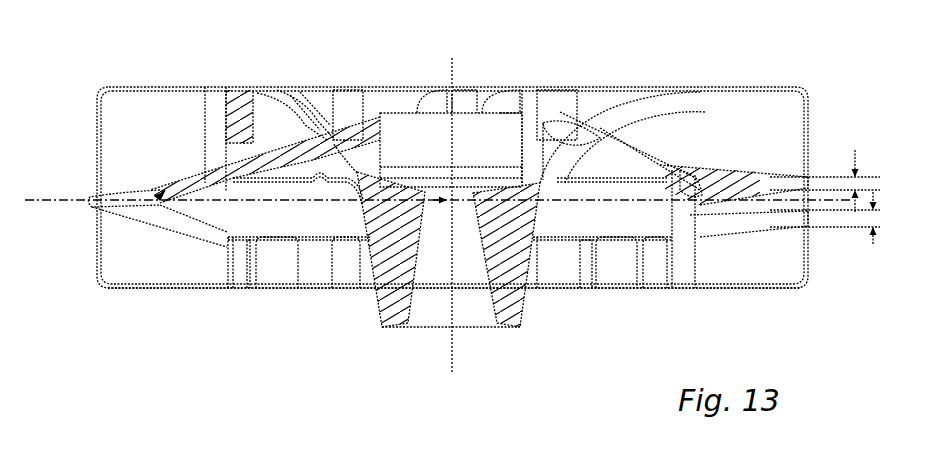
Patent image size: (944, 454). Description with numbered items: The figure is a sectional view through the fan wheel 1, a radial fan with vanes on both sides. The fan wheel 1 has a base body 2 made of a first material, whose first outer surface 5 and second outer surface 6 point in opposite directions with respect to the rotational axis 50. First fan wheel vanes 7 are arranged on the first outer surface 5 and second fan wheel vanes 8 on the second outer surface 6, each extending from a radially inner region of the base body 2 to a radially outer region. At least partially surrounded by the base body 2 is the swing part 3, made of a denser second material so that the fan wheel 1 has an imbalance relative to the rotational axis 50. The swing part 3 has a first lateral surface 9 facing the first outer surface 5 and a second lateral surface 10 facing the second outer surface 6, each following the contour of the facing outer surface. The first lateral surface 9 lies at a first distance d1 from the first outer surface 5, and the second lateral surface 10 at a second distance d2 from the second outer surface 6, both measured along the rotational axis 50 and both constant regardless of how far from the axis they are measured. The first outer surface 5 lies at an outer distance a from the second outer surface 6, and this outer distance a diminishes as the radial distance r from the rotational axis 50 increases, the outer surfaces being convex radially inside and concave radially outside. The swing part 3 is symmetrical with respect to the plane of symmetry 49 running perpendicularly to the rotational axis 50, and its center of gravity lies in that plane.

The fan wheel 1 is at (172, 366).
The base body 2 is at (115, 206).
The swing part 3 is at (210, 190).
The first outer surface 5 is at (168, 181).
The second outer surface 6 is at (173, 223).
The first fan wheel vanes 7 is at (127, 108).
The second fan wheel vanes 8 is at (129, 270).
The first lateral surface 9 is at (188, 186).
The second lateral surface 10 is at (193, 218).
The plane of symmetry 49 is at (43, 203).
The rotational axis 50 is at (455, 370).
The outer distance a is at (158, 197).
The radial distance r is at (273, 202).
The first distance d1 is at (853, 170).
The second distance d2 is at (876, 233).